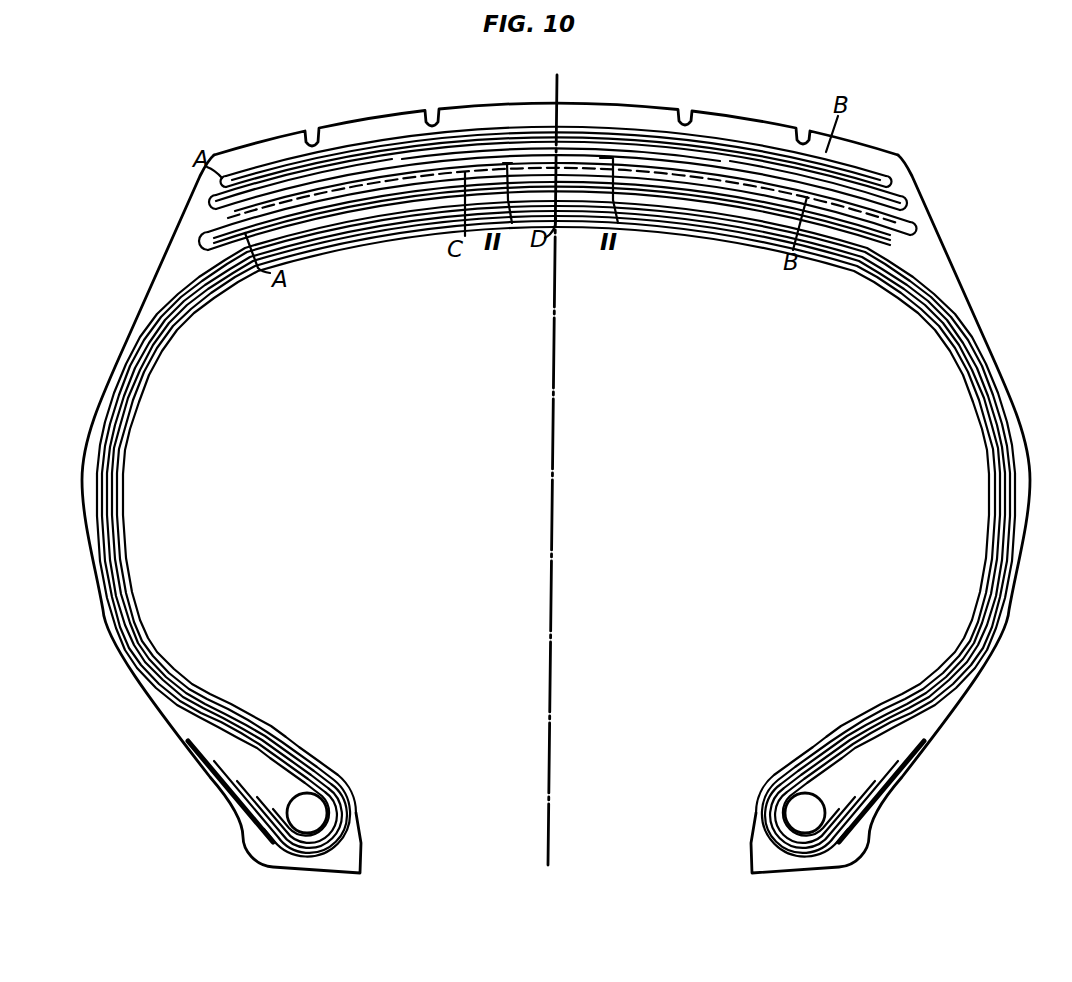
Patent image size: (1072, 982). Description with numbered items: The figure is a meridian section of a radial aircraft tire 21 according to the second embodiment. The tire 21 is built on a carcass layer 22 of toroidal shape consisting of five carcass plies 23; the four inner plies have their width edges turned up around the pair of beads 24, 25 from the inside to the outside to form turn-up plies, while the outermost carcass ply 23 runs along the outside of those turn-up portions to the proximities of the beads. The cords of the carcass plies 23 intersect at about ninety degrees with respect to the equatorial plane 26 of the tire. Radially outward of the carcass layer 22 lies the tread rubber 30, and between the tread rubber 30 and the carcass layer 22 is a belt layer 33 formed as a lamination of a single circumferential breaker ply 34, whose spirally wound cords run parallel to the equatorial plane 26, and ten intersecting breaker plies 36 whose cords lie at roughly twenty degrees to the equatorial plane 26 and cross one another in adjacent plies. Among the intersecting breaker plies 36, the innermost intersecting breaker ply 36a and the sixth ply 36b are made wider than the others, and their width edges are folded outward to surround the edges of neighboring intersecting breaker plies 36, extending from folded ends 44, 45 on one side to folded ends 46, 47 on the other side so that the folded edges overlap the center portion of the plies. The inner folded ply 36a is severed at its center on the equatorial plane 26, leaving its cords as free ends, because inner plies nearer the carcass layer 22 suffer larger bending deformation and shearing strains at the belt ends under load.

The tire 21 is at (923, 157).
The carcass layer 22 is at (1010, 373).
The carcass plies 23 is at (930, 625).
The bead 24 is at (292, 806).
The bead 25 is at (808, 802).
The equatorial plane 26 is at (553, 437).
The tread rubber 30 is at (612, 108).
The belt layer 33 is at (850, 153).
The circumferential breaker ply 34 is at (902, 207).
The intersecting breaker plies 36 is at (750, 145).
The innermost intersecting breaker ply 36a is at (410, 227).
The sixth intersecting breaker ply 36b is at (330, 190).
The folded end 44 is at (202, 240).
The folded end 45 is at (212, 200).
The folded end 46 is at (913, 227).
The folded end 47 is at (890, 188).